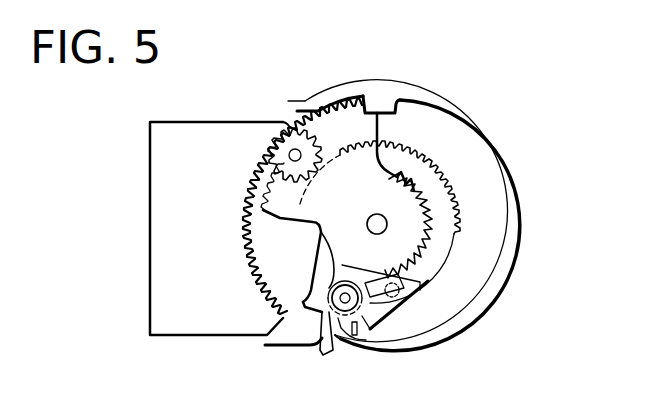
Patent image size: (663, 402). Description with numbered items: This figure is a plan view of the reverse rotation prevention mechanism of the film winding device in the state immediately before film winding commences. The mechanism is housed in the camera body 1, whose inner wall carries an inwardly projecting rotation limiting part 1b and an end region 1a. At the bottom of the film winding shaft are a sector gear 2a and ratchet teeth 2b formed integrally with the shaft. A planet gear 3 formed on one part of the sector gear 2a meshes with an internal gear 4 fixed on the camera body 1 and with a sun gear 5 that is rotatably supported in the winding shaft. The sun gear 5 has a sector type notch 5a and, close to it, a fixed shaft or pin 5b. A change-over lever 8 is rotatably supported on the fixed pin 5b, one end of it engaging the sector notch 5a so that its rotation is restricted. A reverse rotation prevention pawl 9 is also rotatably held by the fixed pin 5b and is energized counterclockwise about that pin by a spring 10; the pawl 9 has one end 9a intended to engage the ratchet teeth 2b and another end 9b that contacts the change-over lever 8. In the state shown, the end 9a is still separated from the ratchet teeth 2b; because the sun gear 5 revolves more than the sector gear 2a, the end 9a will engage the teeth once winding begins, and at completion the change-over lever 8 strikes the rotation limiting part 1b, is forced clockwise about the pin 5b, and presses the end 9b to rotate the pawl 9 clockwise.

The camera body 1 is at (509, 242).
The housing bottom end 1a is at (345, 352).
The rotation limiting part 1b is at (390, 105).
The sector gear 2a is at (328, 111).
The ratchet teeth 2b is at (417, 168).
The planet gear 3 is at (278, 140).
The internal gear 4 is at (217, 138).
The sun gear 5 is at (445, 258).
The sector type notch 5a is at (325, 302).
The fixed shaft or pin 5b is at (345, 292).
The change-over lever 8 is at (356, 331).
The reverse rotation prevention pawl 9 is at (388, 308).
The one end of the pawl 9a is at (413, 290).
The other end of the pawl 9b is at (327, 345).
The spring 10 is at (382, 287).